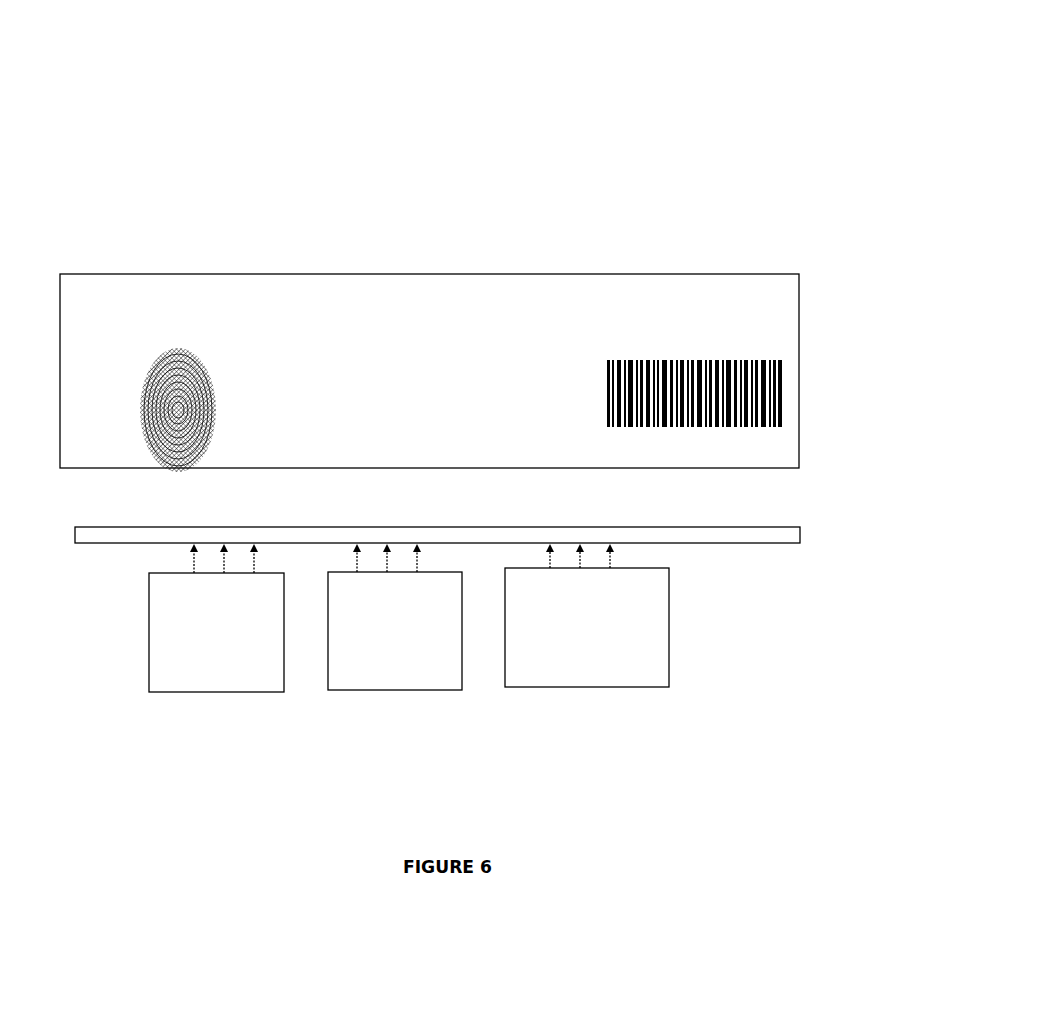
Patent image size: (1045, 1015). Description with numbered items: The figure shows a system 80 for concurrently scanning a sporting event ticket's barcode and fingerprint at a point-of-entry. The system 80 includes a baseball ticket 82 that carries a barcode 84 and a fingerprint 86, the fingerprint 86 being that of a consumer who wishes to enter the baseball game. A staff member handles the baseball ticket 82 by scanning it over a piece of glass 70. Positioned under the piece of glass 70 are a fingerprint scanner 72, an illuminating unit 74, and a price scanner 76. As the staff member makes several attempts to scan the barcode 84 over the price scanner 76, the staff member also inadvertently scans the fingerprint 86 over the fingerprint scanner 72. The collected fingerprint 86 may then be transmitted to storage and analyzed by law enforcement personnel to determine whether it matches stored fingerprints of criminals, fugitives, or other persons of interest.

The piece of glass 70 is at (743, 533).
The fingerprint scanner 72 is at (149, 612).
The illuminating unit 74 is at (343, 672).
The price scanner 76 is at (669, 621).
The system 80 is at (572, 83).
The baseball ticket 82 is at (562, 275).
The barcode 84 is at (722, 360).
The fingerprint 86 is at (140, 413).